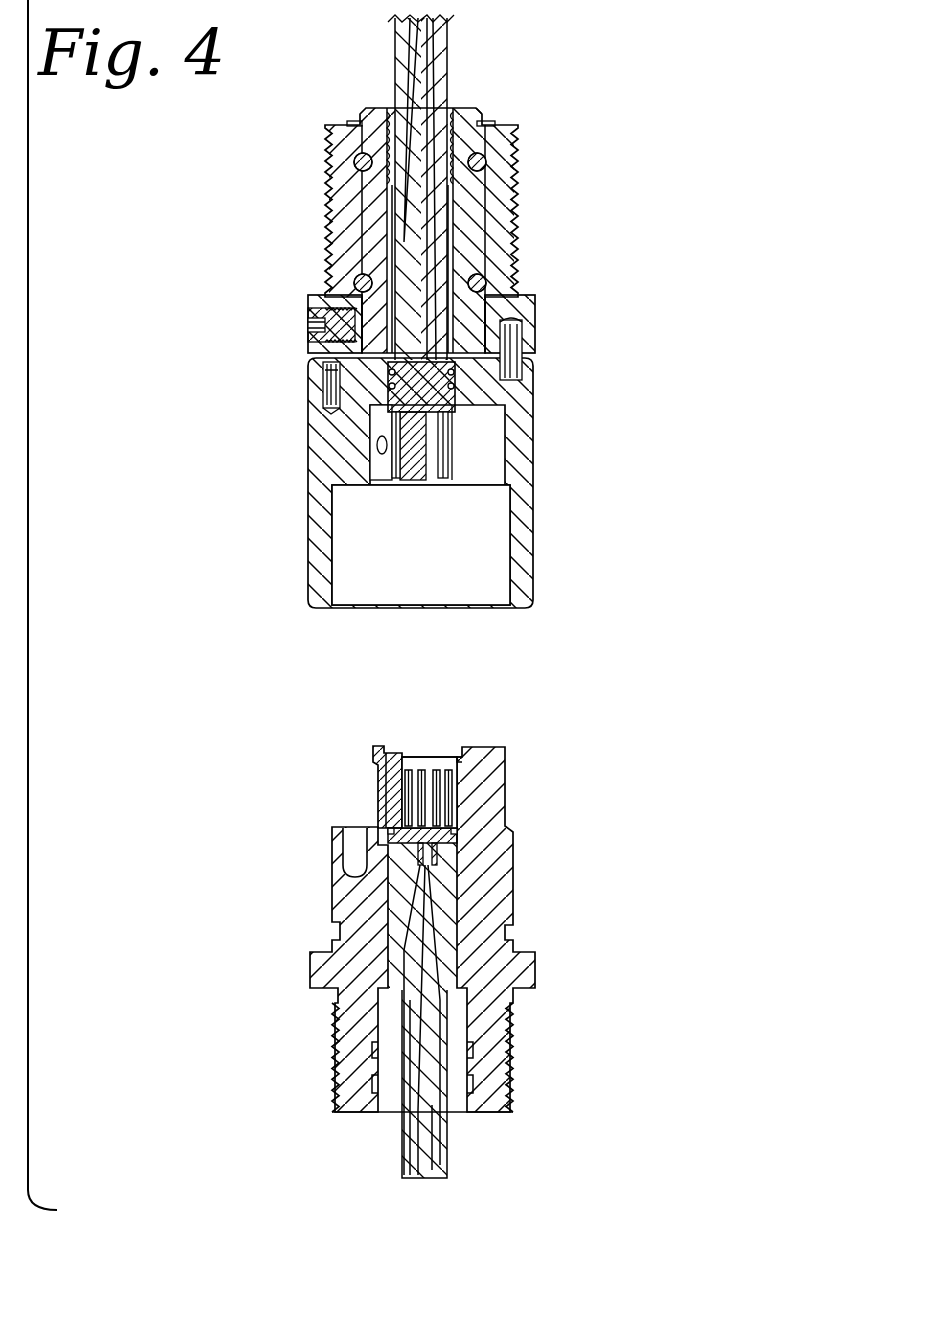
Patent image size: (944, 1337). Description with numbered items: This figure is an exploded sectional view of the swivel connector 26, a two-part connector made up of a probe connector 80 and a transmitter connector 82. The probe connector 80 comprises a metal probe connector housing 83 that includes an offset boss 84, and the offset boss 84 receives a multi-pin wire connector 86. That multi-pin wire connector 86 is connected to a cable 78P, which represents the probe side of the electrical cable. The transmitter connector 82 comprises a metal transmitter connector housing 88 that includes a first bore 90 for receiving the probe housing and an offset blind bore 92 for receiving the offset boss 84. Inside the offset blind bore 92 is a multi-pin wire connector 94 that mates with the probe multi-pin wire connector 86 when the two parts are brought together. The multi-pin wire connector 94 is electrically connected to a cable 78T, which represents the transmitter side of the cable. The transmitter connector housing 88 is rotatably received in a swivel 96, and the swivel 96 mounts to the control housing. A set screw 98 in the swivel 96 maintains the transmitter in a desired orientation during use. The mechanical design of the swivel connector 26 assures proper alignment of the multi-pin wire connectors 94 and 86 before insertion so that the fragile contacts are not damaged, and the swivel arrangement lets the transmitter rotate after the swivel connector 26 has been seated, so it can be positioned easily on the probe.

The swivel connector 26 is at (648, 528).
The cable 78T is at (466, 56).
The swivel 96 is at (506, 208).
The transmitter connector 82 is at (558, 304).
The set screw 98 is at (308, 325).
The multi-pin wire connector 94 is at (455, 440).
The transmitter connector housing 88 is at (520, 445).
The first bore 90 is at (510, 528).
The offset blind bore 92 is at (468, 467).
The probe connector 80 is at (528, 883).
The probe connector housing 83 is at (503, 918).
The offset boss 84 is at (383, 788).
The multi-pin wire connector 86 is at (423, 763).
The cable 78P is at (474, 1150).